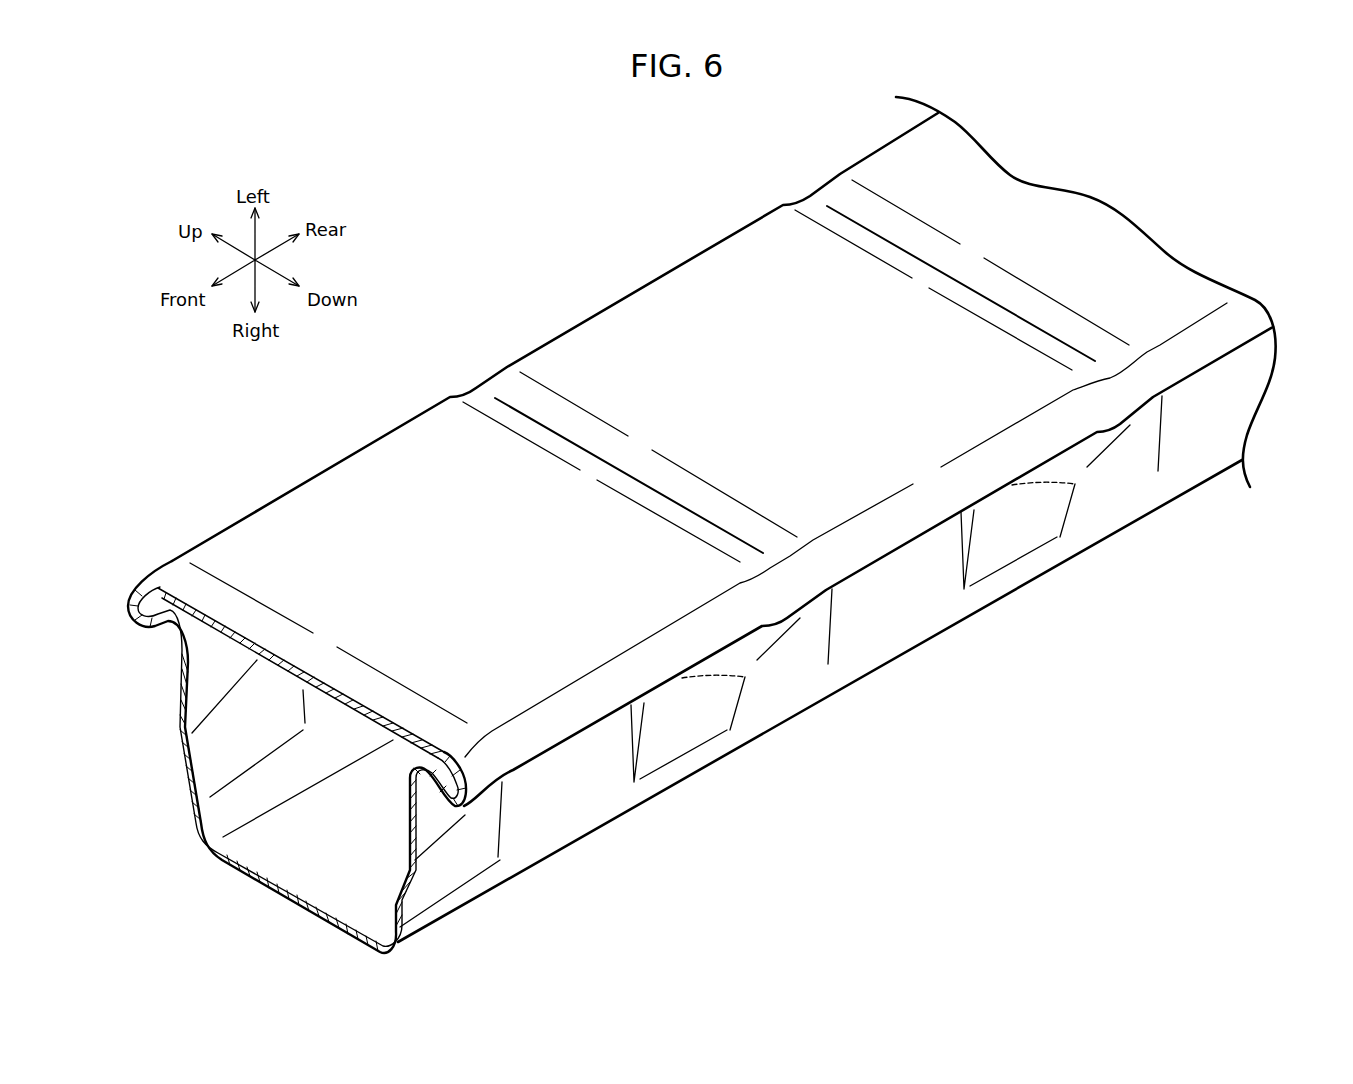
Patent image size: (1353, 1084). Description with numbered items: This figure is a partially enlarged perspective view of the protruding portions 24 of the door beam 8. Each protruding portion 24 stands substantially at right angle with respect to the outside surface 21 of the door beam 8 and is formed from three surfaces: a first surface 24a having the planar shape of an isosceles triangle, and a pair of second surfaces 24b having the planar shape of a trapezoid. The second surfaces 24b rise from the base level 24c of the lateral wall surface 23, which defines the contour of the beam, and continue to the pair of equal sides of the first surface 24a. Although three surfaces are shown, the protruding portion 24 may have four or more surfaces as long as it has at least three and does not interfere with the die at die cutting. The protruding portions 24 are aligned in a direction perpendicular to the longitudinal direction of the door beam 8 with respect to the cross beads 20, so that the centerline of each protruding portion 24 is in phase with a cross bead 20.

The door beam 8 is at (576, 234).
The cross bead 20 is at (565, 430).
The outside surface 21 is at (710, 340).
The lateral wall surface 23 is at (580, 797).
The protruding portion 24 is at (757, 787).
The first surface 24a is at (753, 650).
The second surfaces 24b is at (683, 723).
The base level 24c is at (830, 663).